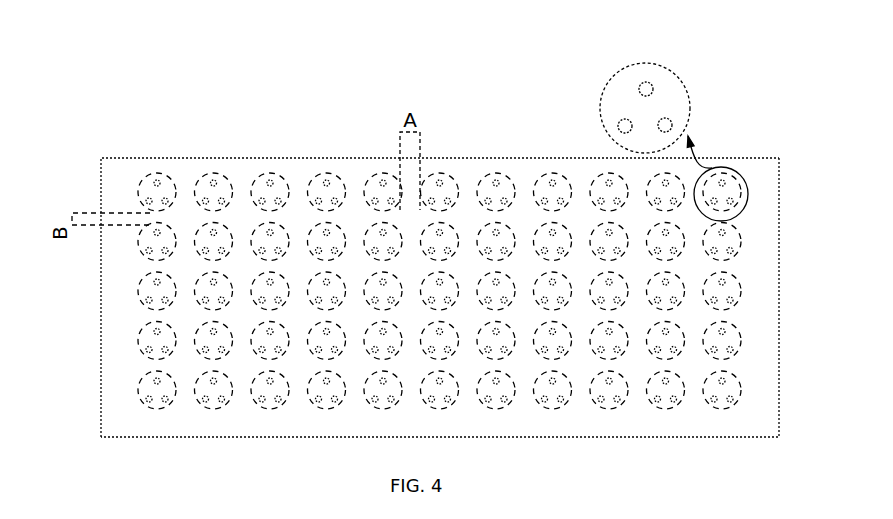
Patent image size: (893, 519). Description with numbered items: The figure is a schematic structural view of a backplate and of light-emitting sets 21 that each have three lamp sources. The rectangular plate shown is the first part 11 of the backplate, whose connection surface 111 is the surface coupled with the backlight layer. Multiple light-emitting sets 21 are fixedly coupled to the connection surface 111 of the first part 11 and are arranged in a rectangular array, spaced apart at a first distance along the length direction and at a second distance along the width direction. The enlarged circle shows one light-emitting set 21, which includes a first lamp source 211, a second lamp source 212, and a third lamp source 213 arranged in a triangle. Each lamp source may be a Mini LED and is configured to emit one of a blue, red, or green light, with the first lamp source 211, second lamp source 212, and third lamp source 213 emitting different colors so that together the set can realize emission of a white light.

The first part 11 is at (440, 262).
The connection surface 111 is at (123, 172).
The light-emitting set 21 is at (172, 182).
The first lamp source 211 is at (651, 85).
The second lamp source 212 is at (620, 129).
The third lamp source 213 is at (671, 122).